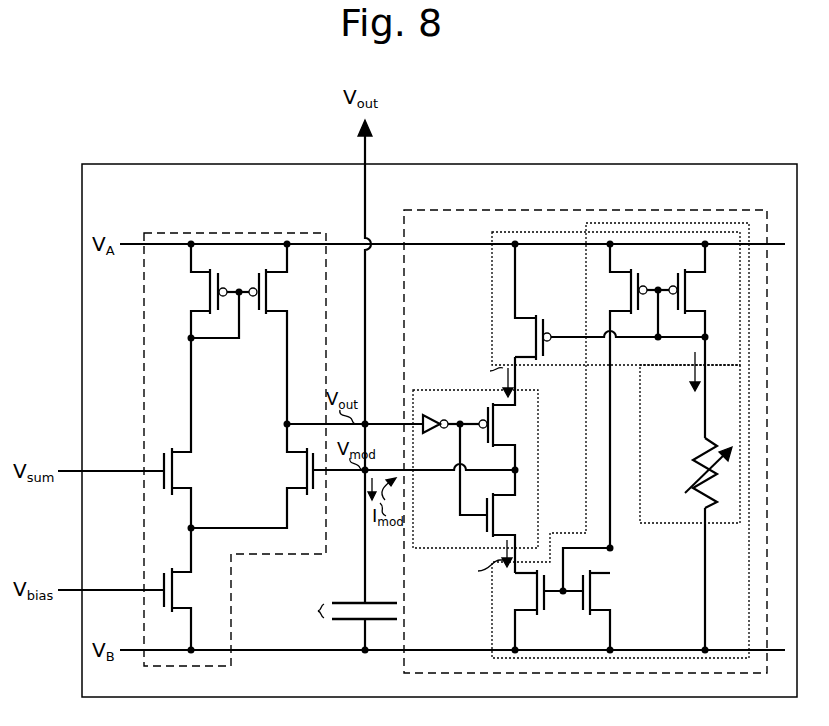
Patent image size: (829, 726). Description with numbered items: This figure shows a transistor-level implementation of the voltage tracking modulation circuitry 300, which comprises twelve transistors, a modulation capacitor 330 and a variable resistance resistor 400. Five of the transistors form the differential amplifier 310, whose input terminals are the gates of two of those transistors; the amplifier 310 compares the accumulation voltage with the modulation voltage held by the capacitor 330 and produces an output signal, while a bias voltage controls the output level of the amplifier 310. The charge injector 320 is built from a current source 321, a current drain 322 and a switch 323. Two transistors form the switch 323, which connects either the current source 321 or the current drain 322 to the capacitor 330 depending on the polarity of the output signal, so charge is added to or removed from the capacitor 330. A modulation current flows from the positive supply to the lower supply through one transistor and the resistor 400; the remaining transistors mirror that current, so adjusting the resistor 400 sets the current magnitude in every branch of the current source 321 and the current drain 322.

The voltage tracking modulation circuitry 300 is at (222, 164).
The differential amplifier 310 is at (238, 233).
The charge injector 320 is at (500, 210).
The current source 321 is at (492, 262).
The current drain 322 is at (492, 648).
The switch 323 is at (440, 390).
The modulation capacitor 330 is at (343, 603).
The variable resistance resistor 400 is at (680, 441).